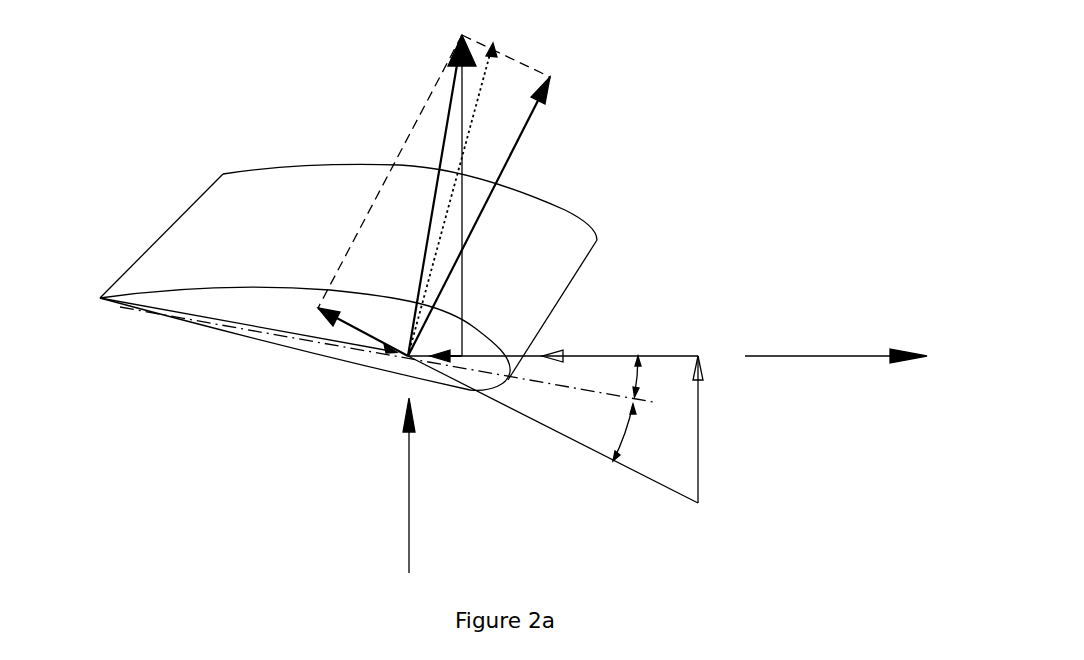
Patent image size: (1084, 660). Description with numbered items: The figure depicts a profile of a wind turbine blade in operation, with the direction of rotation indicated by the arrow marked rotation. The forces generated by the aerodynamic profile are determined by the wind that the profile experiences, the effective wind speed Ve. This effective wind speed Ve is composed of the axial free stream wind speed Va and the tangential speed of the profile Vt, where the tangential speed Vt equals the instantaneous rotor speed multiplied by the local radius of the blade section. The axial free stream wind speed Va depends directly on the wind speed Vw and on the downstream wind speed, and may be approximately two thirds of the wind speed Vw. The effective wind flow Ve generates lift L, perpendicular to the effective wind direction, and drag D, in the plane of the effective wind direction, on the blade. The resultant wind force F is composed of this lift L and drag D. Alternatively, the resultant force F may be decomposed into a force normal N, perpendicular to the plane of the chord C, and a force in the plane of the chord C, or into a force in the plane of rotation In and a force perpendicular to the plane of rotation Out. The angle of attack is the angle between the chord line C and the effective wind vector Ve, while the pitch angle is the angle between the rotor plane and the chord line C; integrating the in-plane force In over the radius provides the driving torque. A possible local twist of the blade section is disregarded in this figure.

The chord C is at (390, 356).
The resultant wind force F is at (440, 163).
The lift L is at (532, 115).
The drag D is at (380, 343).
The normal force N is at (488, 78).
The out-of-plane force Out is at (463, 153).
The in-plane force In is at (430, 352).
The tangential speed of the profile Vt is at (623, 343).
The axial free stream wind speed Va is at (698, 443).
The effective wind speed Ve is at (558, 430).
The wind speed Vw is at (387, 485).
The direction of rotation is at (836, 331).